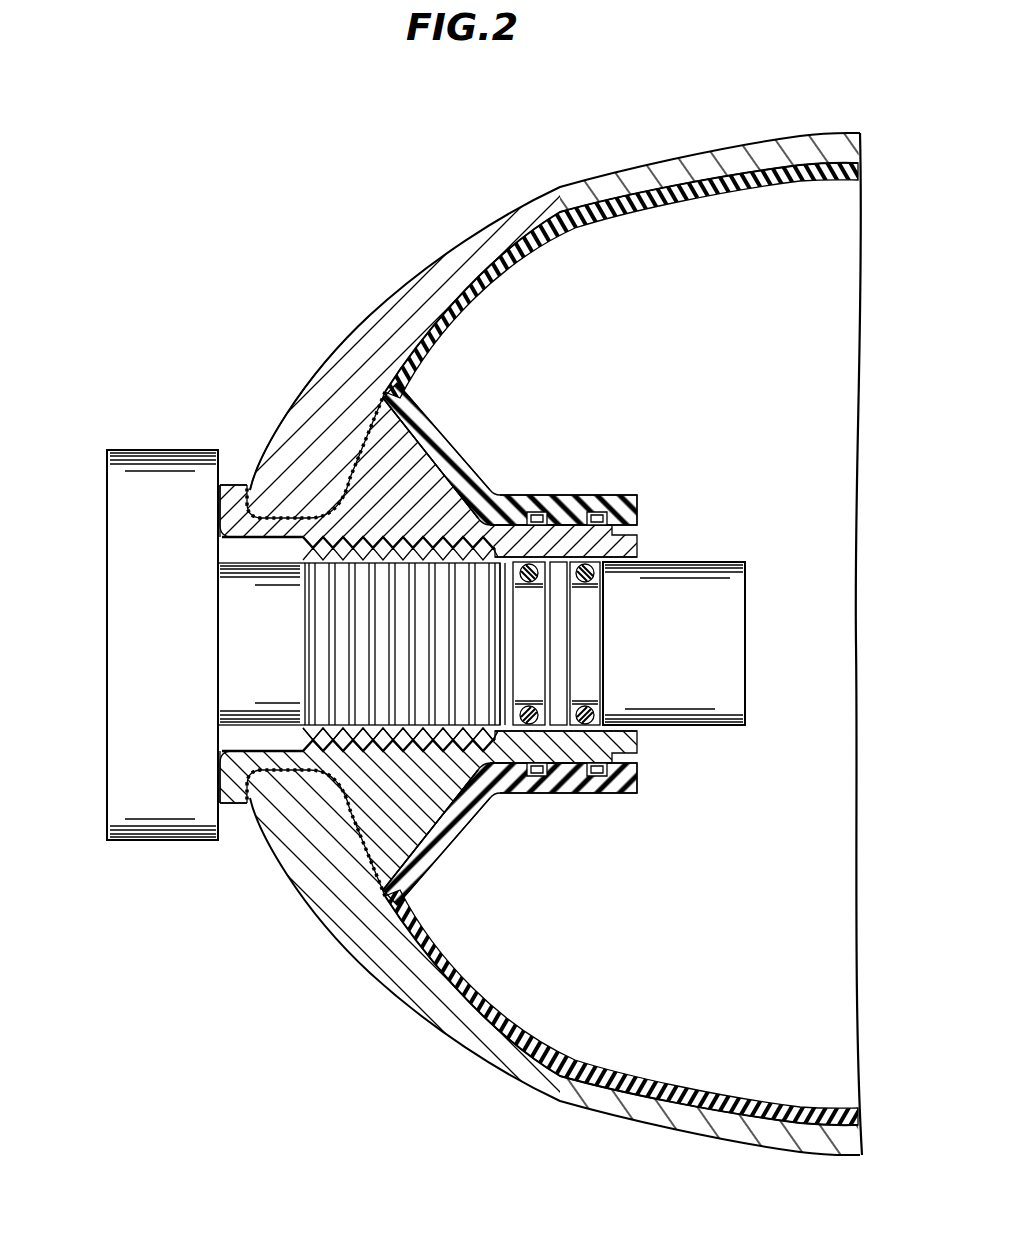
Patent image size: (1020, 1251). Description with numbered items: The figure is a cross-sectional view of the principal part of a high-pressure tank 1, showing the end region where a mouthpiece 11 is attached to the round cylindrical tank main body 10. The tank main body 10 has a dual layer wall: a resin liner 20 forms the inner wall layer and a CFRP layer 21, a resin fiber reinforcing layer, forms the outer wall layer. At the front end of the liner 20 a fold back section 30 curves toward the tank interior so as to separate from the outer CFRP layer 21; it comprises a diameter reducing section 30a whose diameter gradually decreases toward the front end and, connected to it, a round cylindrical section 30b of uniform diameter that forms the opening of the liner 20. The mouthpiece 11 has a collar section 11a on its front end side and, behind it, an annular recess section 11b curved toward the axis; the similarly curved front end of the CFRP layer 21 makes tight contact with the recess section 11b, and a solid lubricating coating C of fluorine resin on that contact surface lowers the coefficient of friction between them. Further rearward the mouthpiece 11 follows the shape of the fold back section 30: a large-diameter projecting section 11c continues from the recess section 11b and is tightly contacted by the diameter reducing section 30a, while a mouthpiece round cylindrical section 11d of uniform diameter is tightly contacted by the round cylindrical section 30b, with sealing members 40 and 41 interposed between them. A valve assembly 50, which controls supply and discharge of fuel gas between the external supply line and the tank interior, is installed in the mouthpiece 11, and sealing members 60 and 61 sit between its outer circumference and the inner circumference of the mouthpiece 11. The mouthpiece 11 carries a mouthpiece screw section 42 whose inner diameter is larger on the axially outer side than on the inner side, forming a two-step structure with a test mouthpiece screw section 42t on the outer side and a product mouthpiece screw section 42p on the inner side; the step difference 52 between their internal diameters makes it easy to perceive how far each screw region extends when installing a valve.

The high-pressure tank 1 is at (273, 304).
The tank main body 10 is at (531, 199).
The liner 20 is at (510, 262).
The CFRP layer 21 is at (356, 340).
The mouthpiece 11 is at (213, 492).
The collar section 11a is at (235, 484).
The recess section 11b is at (288, 498).
The projecting section 11c is at (430, 428).
The mouthpiece round cylindrical section 11d is at (505, 524).
The fold back section 30 is at (634, 496).
The diameter reducing section 30a is at (445, 448).
The round cylindrical section 30b is at (577, 494).
The sealing member 40 is at (538, 511).
The sealing member 41 is at (600, 511).
The mouthpiece screw section 42 is at (256, 553).
The product mouthpiece screw section 42p is at (414, 560).
The test mouthpiece screw section 42t is at (383, 742).
The valve assembly 50 is at (136, 448).
The step difference 52 is at (357, 462).
The sealing member 60 is at (527, 582).
The sealing member 61 is at (600, 574).
The solid lubricating coating C is at (312, 500).